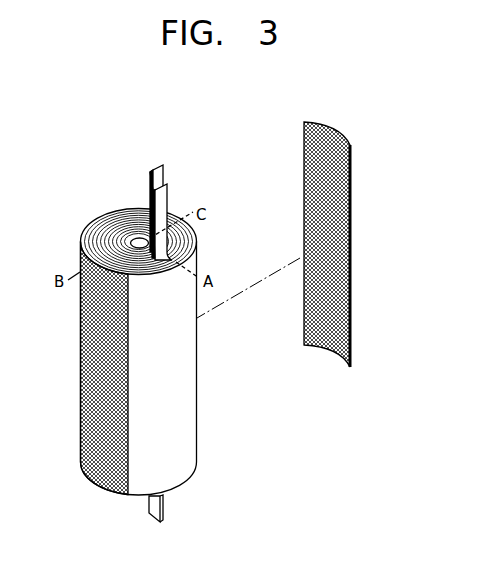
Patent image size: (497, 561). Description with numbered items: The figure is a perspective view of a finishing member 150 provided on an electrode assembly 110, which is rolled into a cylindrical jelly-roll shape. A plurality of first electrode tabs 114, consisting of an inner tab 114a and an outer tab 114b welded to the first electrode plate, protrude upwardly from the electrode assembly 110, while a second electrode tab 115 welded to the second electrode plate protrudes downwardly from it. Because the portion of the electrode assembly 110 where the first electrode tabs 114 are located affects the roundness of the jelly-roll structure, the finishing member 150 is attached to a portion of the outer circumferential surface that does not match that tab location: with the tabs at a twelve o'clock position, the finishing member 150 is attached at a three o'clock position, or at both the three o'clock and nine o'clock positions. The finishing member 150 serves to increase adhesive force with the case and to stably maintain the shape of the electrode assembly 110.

The electrode assembly 110 is at (200, 350).
The first electrode tabs 114 is at (213, 196).
The inner tab 114a is at (164, 172).
The outer tab 114b is at (168, 200).
The second electrode tab 115 is at (166, 505).
The finishing member 150 is at (80, 381).